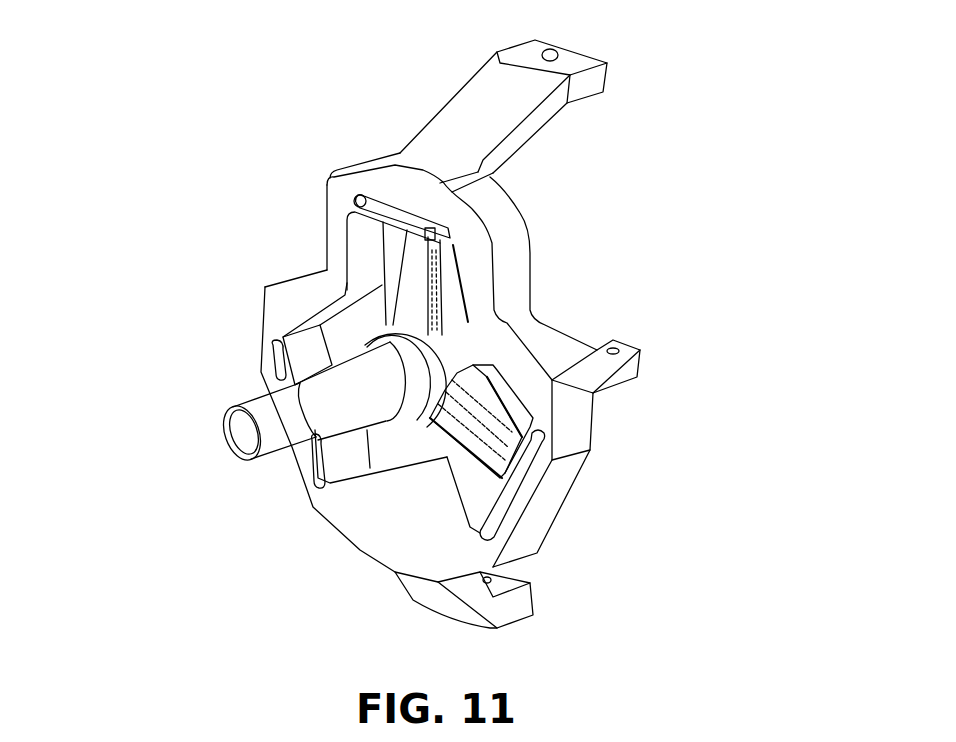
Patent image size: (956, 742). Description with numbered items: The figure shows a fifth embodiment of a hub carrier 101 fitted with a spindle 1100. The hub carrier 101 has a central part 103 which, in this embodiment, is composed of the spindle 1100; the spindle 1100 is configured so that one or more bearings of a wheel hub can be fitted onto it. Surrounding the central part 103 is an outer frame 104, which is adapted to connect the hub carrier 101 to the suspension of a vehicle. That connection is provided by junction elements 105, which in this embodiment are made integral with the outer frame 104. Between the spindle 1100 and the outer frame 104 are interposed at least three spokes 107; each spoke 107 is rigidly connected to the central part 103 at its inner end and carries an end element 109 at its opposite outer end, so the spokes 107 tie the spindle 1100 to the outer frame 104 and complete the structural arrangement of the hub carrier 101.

The hub carrier 101 is at (676, 451).
The central part 103 is at (410, 418).
The outer frame 104 is at (497, 323).
The junction element 105 is at (460, 127).
The spoke 107 is at (410, 283).
The end element 109 is at (433, 230).
The spindle 1100 is at (287, 415).